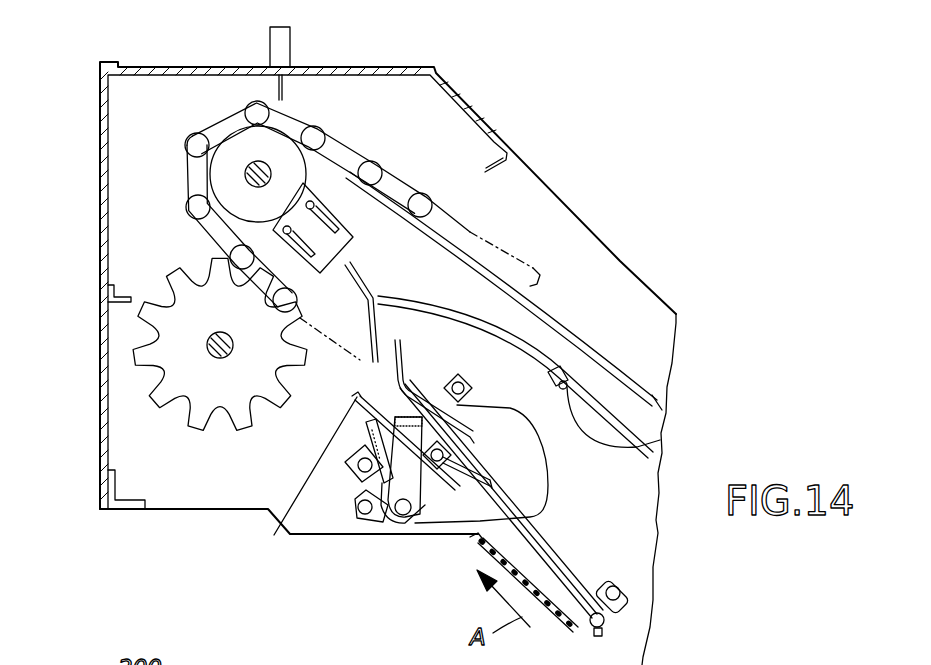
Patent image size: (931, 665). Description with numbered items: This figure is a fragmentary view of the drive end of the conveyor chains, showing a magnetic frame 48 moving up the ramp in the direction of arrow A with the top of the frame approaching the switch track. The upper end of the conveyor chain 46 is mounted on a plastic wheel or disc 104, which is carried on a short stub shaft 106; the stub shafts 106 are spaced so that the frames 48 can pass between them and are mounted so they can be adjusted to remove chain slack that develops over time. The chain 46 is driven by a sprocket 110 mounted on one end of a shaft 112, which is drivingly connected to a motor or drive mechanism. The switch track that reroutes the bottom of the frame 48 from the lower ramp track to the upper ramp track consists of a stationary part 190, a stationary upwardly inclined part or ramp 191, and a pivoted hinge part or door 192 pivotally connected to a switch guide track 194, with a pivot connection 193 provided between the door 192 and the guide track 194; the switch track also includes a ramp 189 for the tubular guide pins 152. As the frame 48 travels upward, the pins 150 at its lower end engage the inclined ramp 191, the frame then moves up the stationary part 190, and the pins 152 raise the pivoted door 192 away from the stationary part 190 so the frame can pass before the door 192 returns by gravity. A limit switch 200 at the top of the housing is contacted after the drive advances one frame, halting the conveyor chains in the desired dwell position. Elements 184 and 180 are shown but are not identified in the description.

The limit switch 200 is at (270, 40).
The plastic wheels or discs 104 is at (247, 140).
The stub shafts 106 is at (247, 178).
The conveyor chain 46 is at (350, 150).
The sprocket 110 is at (145, 362).
The shaft 112 is at (207, 345).
The stationary part of switch track 190 is at (373, 335).
The stationary upwardly inclined part or ramp 191 is at (402, 350).
The pivoted hinge part or door 192 is at (460, 313).
The pivot connection 193 is at (630, 447).
The switch guide track 194 is at (618, 420).
The ramp 189 is at (300, 480).
The cam plate 184 is at (388, 485).
The pivot bracket 180 is at (403, 515).
The magnetic frame 48 is at (543, 547).
The pins 150 is at (620, 590).
The tubular guide pins 152 is at (603, 627).